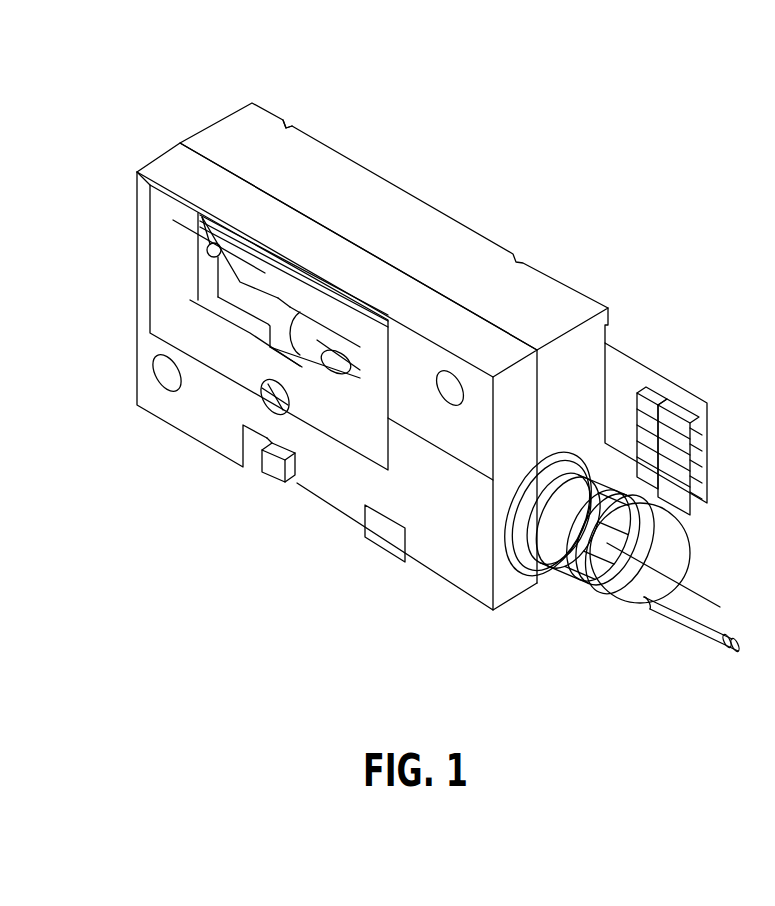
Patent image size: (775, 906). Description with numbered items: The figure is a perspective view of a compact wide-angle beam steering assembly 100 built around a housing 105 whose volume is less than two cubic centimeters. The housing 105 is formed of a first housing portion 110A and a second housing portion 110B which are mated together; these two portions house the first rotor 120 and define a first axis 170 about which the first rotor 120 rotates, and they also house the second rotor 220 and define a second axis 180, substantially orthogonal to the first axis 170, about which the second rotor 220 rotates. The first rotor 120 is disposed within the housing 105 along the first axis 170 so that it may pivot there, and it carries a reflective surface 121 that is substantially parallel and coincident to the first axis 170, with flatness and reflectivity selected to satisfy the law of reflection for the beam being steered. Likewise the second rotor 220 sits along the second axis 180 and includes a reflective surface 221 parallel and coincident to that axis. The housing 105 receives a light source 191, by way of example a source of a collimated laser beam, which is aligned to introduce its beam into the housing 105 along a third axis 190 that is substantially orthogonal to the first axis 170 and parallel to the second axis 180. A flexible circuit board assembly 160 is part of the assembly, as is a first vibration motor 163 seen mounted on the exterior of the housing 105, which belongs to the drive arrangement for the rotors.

The compact wide-angle beam steering assembly 100 is at (590, 130).
The housing 105 is at (286, 123).
The first housing portion 110A is at (243, 128).
The second housing portion 110B is at (167, 168).
The first rotor 120 is at (322, 338).
The reflective surface 121 is at (297, 347).
The flexible circuit board assembly 160 is at (650, 370).
The first vibration motor 163 is at (262, 468).
The first axis 170 is at (330, 367).
The second axis 180 is at (275, 272).
The third axis 190 is at (473, 468).
The light source 191 is at (628, 578).
The second rotor 220 is at (290, 297).
The reflective surface 221 is at (245, 288).